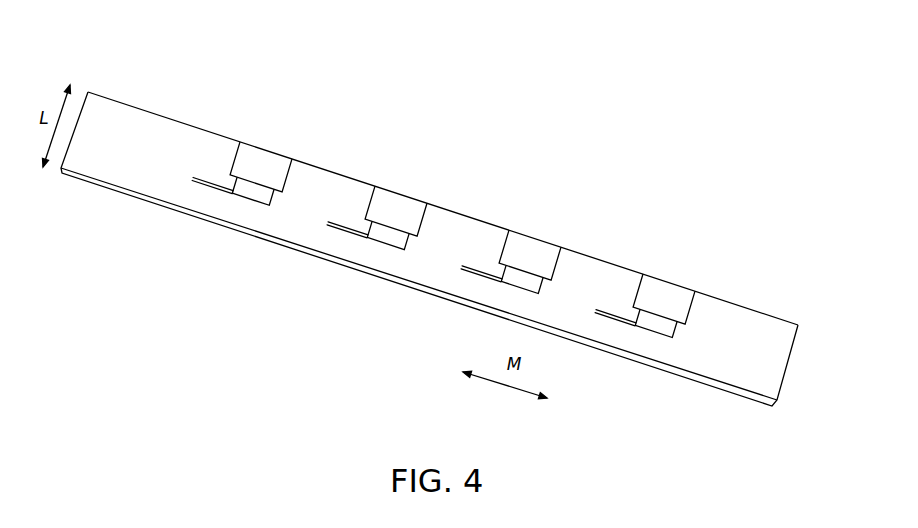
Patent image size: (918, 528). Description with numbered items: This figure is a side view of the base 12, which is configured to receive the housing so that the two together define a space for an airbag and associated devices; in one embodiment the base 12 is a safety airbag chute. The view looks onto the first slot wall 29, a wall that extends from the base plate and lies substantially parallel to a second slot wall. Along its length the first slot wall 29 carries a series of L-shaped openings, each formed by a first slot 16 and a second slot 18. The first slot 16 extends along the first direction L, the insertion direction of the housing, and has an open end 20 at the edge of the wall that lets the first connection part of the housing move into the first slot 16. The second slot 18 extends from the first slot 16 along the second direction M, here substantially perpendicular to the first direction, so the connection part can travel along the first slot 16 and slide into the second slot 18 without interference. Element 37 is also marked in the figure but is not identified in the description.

The base 12 is at (429, 247).
The first slot 16 is at (280, 196).
The second slot 18 is at (207, 177).
The open end 20 is at (291, 155).
The first slot wall 29 is at (764, 311).
The ledge 37 is at (386, 233).